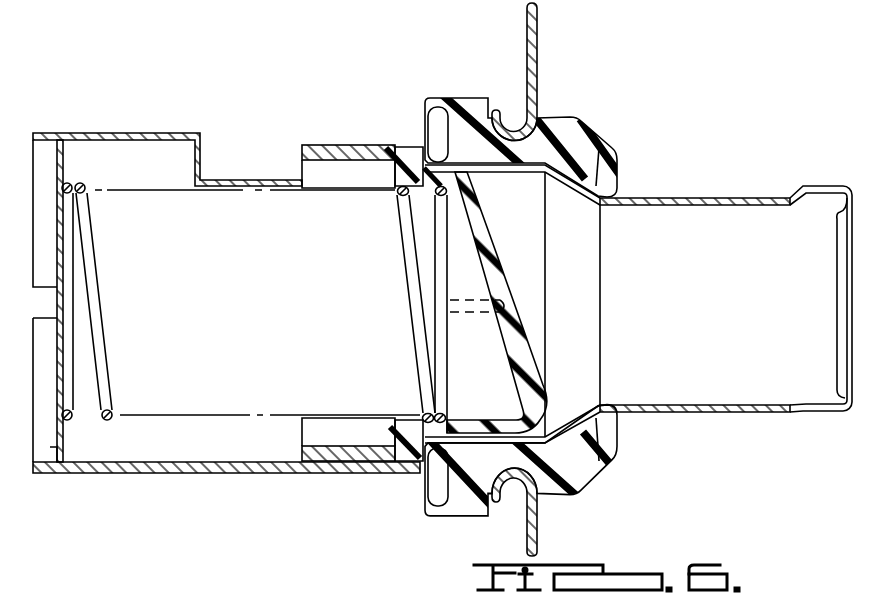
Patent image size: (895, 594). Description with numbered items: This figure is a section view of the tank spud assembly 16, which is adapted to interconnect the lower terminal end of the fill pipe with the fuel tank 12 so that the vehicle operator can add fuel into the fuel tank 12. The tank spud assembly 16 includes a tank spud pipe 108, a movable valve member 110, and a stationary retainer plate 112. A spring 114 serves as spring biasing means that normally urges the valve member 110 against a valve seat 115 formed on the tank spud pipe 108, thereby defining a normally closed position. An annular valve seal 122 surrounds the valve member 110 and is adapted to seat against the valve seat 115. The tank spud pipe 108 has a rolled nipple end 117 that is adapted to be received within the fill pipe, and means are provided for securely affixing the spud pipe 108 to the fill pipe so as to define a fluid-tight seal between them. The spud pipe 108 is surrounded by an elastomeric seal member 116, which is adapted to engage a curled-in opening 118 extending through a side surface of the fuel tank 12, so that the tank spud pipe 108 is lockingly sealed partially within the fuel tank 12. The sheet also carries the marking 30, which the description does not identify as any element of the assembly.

The tank spud assembly 16 is at (297, 95).
The stationary retainer plate 112 is at (57, 433).
The spring 114 is at (113, 420).
The annular valve seal 122 is at (412, 142).
The valve seat 115 is at (448, 100).
The fuel tank 12 is at (537, 28).
The movable valve member 110 is at (490, 232).
The tank spud pipe 108 is at (678, 198).
The rolled nipple end 117 is at (843, 228).
The elastomeric seal member 116 is at (600, 468).
The curled-in opening 118 is at (548, 492).
The sheet marking 30 is at (274, 582).